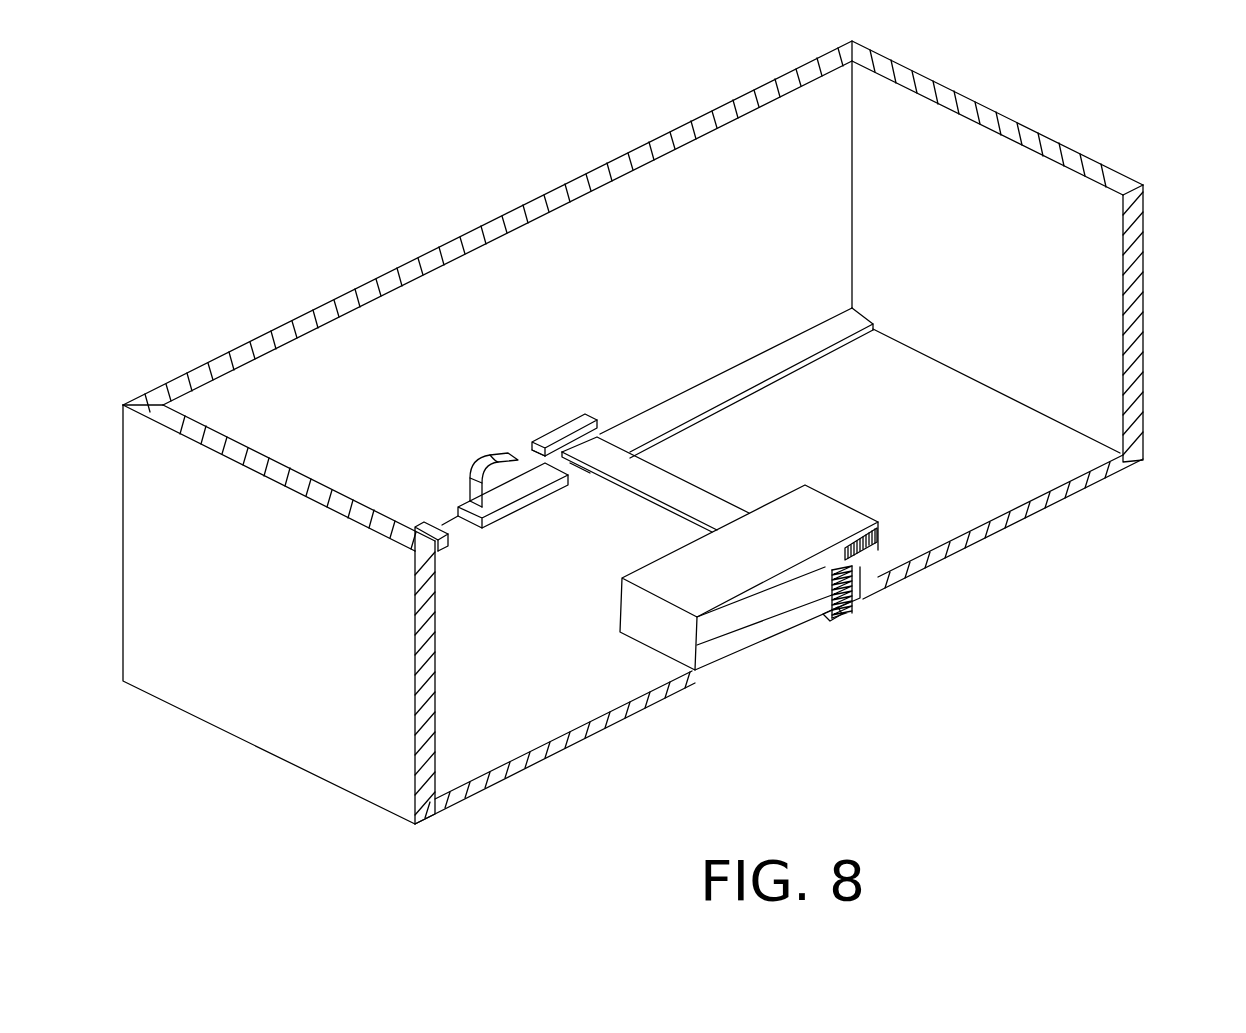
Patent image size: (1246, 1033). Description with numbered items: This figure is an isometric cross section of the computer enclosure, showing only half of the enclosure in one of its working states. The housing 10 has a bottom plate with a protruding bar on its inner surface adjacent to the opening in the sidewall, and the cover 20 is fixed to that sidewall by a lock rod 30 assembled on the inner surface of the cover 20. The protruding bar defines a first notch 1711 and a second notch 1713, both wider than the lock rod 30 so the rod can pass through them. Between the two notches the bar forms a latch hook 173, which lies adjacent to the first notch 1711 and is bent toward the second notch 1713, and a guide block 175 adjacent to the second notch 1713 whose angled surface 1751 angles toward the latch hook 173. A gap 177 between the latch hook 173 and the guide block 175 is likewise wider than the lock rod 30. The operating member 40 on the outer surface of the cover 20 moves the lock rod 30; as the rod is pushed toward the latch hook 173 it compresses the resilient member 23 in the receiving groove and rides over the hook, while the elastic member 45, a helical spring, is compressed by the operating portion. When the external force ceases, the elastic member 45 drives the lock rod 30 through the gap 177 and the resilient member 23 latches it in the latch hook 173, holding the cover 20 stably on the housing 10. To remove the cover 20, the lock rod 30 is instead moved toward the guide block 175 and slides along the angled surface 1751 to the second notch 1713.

The housing 10 is at (1085, 268).
The cover 20 is at (1013, 477).
The resilient member 23 is at (880, 545).
The lock rod 30 is at (643, 480).
The operating member 40 is at (856, 617).
The elastic member 45 is at (845, 620).
The first notch 1711 is at (452, 528).
The second notch 1713 is at (580, 468).
The latch hook 173 is at (492, 460).
The guide block 175 is at (578, 417).
The angled surface 1751 is at (558, 450).
The gap 177 is at (527, 452).